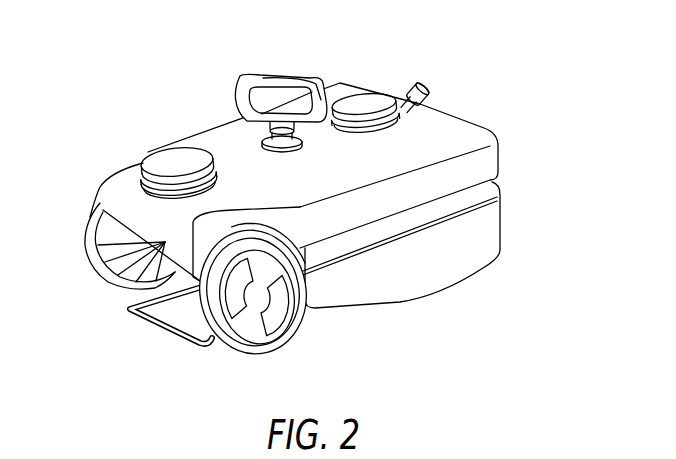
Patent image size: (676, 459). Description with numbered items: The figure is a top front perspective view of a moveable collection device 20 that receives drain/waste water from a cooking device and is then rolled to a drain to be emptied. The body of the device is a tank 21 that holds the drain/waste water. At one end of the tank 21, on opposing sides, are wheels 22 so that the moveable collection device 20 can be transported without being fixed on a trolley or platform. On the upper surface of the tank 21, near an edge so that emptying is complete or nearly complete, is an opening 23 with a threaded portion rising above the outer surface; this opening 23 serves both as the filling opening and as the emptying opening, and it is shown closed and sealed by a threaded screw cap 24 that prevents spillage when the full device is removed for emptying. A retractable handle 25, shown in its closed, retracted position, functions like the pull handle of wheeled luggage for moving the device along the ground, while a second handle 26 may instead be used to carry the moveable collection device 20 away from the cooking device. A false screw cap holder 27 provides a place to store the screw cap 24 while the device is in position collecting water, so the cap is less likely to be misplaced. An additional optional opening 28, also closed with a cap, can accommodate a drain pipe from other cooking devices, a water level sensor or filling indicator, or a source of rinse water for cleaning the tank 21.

The moveable collection device 20 is at (160, 80).
The tank 21 is at (460, 117).
The wheels 22 is at (86, 240).
The opening 23 is at (217, 180).
The threaded screw cap 24 is at (160, 160).
The handle 25 is at (153, 323).
The handle 26 is at (267, 74).
The false screw cap holder 27 is at (364, 103).
The additional optional opening 28 is at (428, 79).